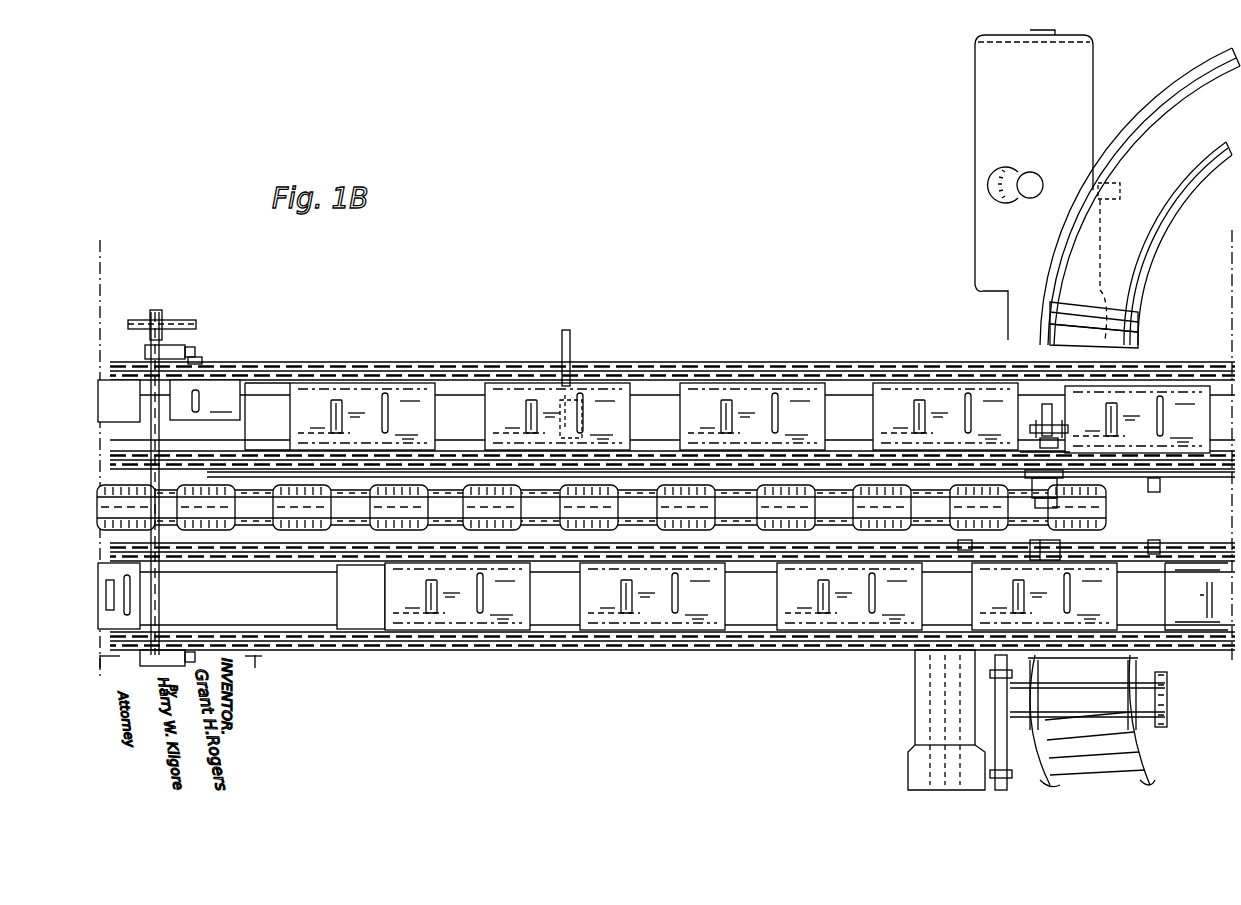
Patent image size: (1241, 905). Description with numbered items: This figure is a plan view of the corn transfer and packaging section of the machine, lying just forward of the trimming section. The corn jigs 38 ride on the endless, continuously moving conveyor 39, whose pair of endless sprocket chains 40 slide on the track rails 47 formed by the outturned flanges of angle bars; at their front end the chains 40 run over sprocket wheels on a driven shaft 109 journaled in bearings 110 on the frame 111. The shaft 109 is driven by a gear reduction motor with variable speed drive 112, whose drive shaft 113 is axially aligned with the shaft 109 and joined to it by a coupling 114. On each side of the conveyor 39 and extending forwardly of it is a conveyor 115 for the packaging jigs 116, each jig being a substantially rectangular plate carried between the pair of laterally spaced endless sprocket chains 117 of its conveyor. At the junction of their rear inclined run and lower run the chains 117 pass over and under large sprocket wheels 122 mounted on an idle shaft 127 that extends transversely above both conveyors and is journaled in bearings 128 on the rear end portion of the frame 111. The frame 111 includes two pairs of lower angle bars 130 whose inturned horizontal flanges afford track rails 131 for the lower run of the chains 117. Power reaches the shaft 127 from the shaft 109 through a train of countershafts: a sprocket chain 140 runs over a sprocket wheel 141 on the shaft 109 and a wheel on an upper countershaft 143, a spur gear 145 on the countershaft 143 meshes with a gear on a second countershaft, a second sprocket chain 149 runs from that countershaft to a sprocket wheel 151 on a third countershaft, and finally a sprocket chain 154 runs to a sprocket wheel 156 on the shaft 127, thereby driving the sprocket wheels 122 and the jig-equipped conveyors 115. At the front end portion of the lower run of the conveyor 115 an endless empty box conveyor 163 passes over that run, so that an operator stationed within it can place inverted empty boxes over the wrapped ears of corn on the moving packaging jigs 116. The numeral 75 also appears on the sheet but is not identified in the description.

The corn jigs 38 is at (655, 530).
The conveyor 39 is at (548, 488).
The sprocket chains 40 is at (648, 482).
The track rails 47 is at (755, 494).
The section line 75 is at (190, 661).
The driven shaft 109 is at (1060, 442).
The bearings 110 is at (1062, 486).
The frame 111 is at (198, 358).
The gear reduction motor with variable speed drive 112 is at (975, 283).
The drive shaft 113 is at (1042, 418).
The coupling 114 is at (1060, 430).
The conveyor 115 is at (678, 366).
The packaging jigs 116 is at (490, 425).
The sprocket chains 117 is at (372, 372).
The large sprocket wheels 122 is at (124, 372).
The idle shaft 127 is at (158, 598).
The bearings 128 is at (178, 345).
The lower angle bars 130 is at (270, 390).
The track rails 131 is at (856, 388).
The sprocket chain 140 is at (862, 450).
The sprocket wheel 141 is at (1022, 478).
The upper countershaft 143 is at (572, 347).
The spur gear 145 is at (620, 405).
The second sprocket chain 149 is at (430, 430).
The sprocket wheel 151 is at (170, 440).
The sprocket chain 154 is at (188, 318).
The sprocket wheel 156 is at (135, 320).
The endless empty box conveyor 163 is at (1140, 322).